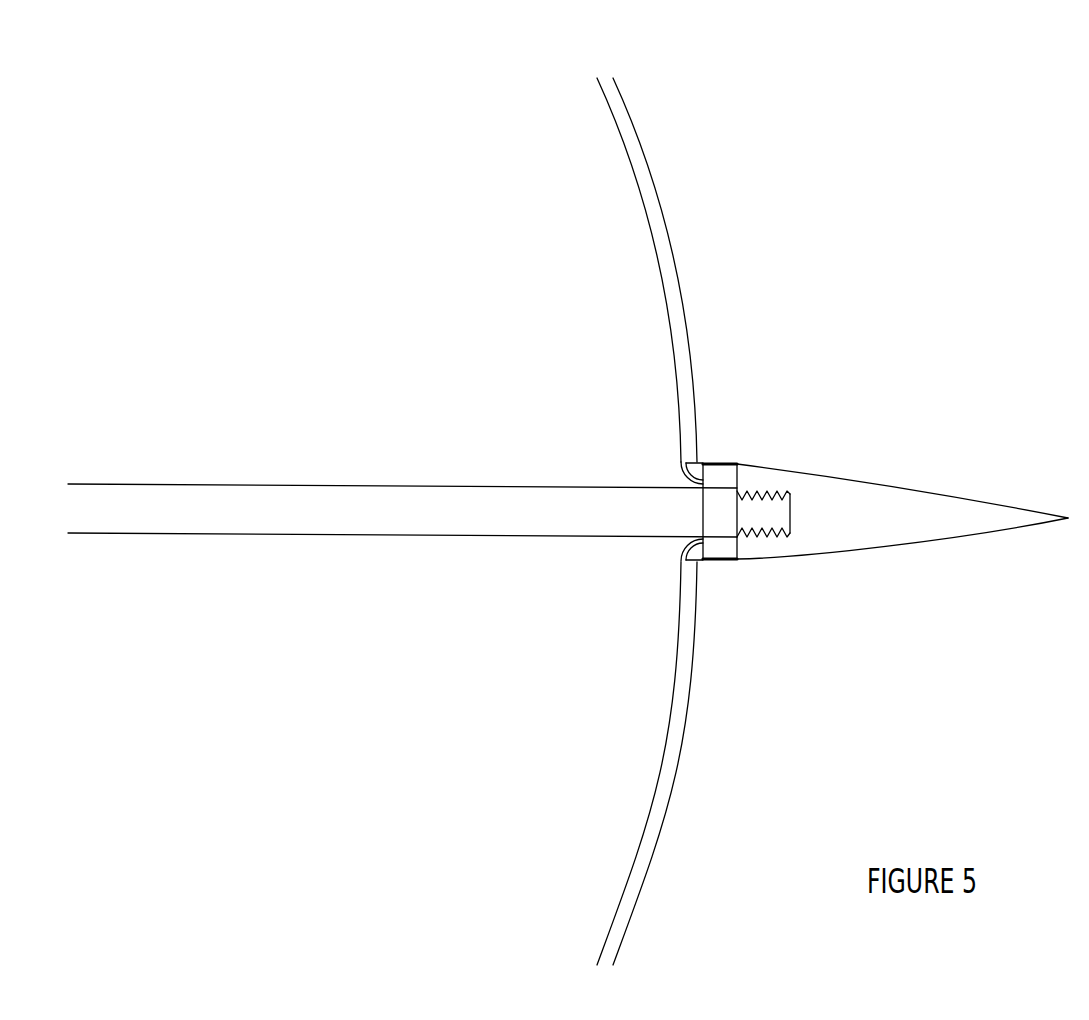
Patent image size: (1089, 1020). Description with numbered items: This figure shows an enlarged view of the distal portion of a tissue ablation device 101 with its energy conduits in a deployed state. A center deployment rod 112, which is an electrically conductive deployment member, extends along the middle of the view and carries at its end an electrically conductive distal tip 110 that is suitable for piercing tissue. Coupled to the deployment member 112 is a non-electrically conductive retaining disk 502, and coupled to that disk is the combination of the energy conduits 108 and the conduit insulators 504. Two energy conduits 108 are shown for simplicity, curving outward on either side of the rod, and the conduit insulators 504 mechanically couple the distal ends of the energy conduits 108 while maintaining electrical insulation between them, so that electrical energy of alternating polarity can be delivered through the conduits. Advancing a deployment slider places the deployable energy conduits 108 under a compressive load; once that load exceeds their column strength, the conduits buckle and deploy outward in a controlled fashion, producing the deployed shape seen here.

The tissue ablation device 101 is at (767, 282).
The energy conduits 108 is at (702, 400).
The distal tip 110 is at (842, 475).
The center deployment rod 112 is at (483, 480).
The retaining disk 502 is at (730, 465).
The conduit insulators 504 is at (678, 555).